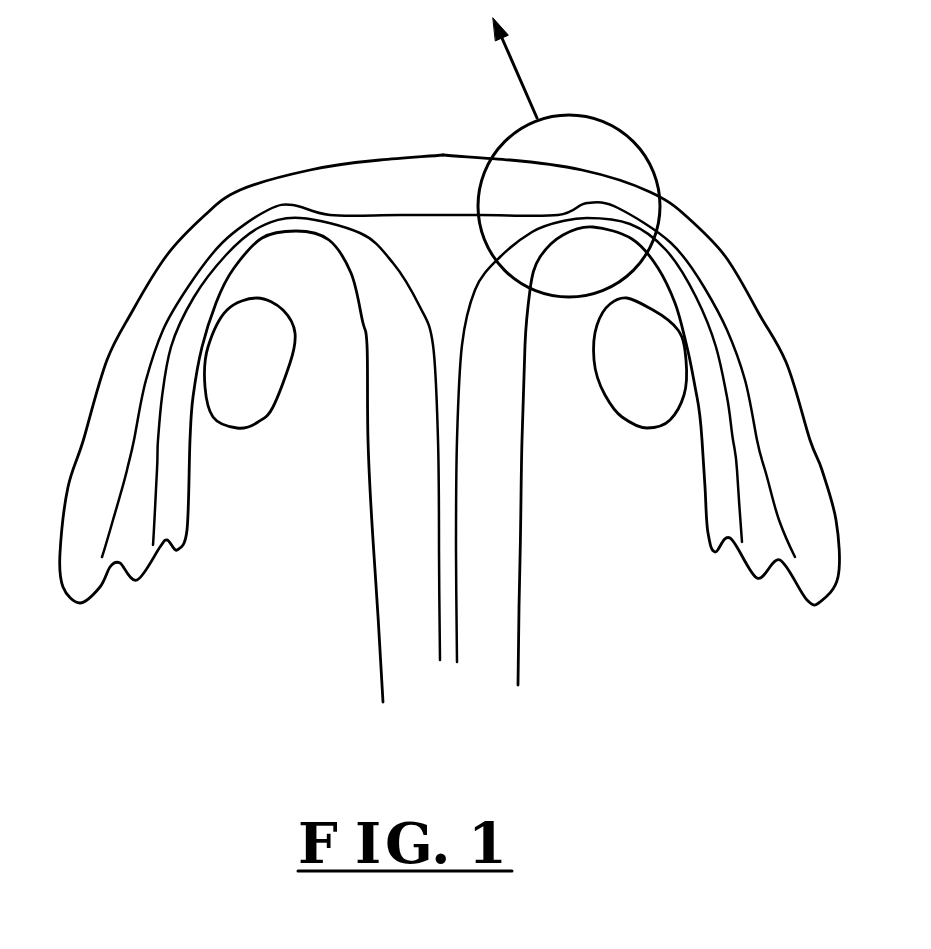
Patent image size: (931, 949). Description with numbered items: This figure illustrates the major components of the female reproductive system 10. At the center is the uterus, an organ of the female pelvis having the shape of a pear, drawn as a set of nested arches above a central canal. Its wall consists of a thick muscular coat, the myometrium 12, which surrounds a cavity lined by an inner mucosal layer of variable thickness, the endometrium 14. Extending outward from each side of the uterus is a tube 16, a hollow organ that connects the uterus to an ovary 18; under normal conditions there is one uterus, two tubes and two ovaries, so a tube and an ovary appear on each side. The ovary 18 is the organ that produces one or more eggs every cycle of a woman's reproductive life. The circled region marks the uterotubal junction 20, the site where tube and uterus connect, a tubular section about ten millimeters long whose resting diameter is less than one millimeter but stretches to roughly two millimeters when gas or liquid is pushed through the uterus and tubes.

The female reproductive system 10 is at (697, 194).
The myometrium 12 is at (413, 205).
The endometrium 14 is at (421, 274).
The tube 16 is at (127, 323).
The ovary 18 is at (227, 378).
The uterotubal junction 20 is at (618, 125).